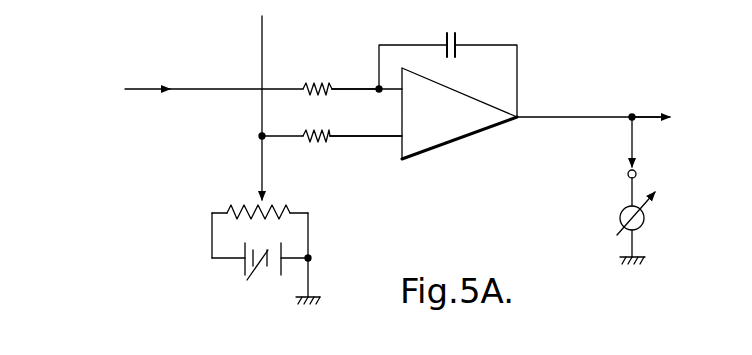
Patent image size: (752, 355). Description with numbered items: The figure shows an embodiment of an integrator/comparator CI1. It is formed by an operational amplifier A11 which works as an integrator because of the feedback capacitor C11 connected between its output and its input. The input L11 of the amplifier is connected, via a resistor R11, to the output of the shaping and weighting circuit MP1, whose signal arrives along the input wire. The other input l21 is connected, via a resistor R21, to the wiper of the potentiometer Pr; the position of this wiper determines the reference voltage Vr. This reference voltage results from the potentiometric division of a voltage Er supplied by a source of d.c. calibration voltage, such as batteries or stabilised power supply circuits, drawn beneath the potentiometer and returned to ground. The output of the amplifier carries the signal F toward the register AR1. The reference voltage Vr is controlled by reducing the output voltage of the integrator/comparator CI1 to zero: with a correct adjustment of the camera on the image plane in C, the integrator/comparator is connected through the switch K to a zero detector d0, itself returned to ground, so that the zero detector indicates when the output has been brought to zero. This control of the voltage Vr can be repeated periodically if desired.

The shaping and weighting circuit MP1 is at (117, 88).
The resistor R11 is at (308, 75).
The input L11 is at (355, 78).
The resistor R21 is at (315, 152).
The input l21 is at (366, 126).
The reference voltage Vr is at (264, 168).
The feedback capacitor C11 is at (448, 70).
The operational amplifier A11 is at (459, 113).
The integrator/comparator CI1 is at (441, 188).
The potentiometer Pr is at (280, 218).
The d.c. calibration voltage Er is at (266, 275).
The output signal F is at (651, 101).
The output to register AR1 is at (662, 133).
The switch K is at (618, 142).
The image plane C is at (641, 175).
The zero detector d0 is at (620, 215).